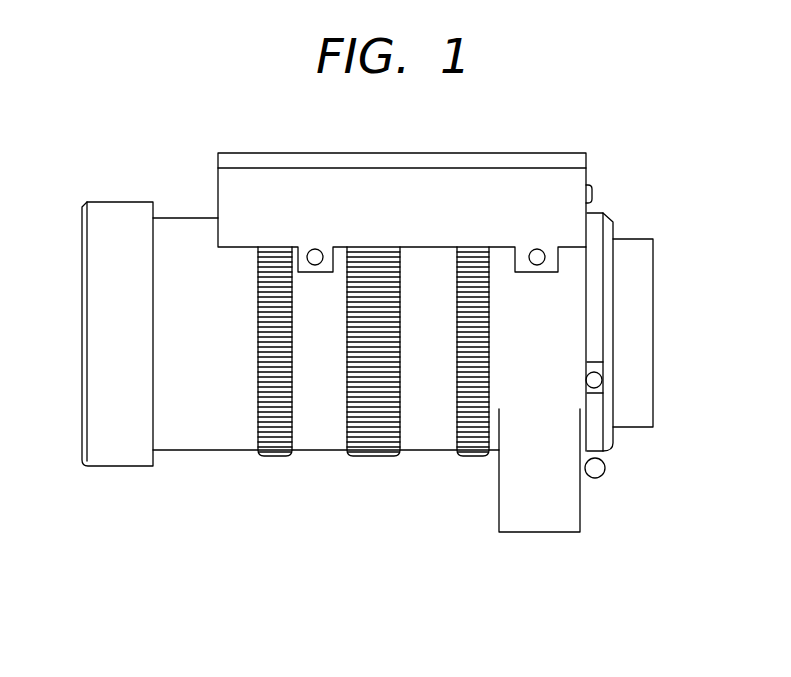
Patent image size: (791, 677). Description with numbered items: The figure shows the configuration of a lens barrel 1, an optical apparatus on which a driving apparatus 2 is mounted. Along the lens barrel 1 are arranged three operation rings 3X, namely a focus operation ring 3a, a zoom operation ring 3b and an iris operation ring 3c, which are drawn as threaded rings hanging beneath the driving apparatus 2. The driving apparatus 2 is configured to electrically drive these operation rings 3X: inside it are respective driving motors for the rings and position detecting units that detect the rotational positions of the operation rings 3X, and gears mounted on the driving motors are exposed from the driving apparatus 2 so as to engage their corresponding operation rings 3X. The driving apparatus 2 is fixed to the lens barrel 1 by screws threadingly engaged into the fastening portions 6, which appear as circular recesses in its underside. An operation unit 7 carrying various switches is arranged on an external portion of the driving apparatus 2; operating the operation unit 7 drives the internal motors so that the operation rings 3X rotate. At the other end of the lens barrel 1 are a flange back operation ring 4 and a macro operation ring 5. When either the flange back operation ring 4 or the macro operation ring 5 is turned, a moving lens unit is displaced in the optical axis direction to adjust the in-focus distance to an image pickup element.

The lens barrel 1 is at (197, 457).
The driving apparatus 2 is at (203, 183).
The operation rings 3X is at (368, 409).
The focus operation ring 3a is at (272, 456).
The zoom operation ring 3b is at (367, 456).
The iris operation ring 3c is at (472, 382).
The flange back operation ring 4 is at (605, 468).
The macro operation ring 5 is at (602, 380).
The fastening portions 6 is at (317, 249).
The operation unit 7 is at (592, 193).